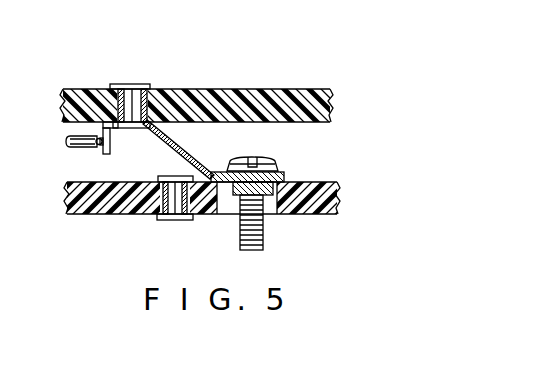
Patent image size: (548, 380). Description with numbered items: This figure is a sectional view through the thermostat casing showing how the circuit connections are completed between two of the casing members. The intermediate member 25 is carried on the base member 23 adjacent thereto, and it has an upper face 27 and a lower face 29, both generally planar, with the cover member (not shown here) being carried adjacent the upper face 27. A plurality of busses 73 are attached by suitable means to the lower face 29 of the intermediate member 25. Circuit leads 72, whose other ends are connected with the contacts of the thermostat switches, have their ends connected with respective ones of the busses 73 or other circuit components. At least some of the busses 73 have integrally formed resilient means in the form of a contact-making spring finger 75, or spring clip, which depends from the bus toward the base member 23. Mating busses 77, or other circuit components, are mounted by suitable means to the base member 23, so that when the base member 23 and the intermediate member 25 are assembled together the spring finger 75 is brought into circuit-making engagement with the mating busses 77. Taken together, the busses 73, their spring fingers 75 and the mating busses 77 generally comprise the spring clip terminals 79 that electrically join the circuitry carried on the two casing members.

The base member 23 is at (337, 193).
The intermediate member 25 is at (207, 99).
The upper face 27 is at (316, 90).
The lower face 29 is at (320, 123).
The circuit leads 72 is at (67, 143).
The busses 73 is at (103, 126).
The spring finger 75 is at (172, 142).
The mating busses 77 is at (220, 172).
The spring clip terminals 79 is at (333, 237).